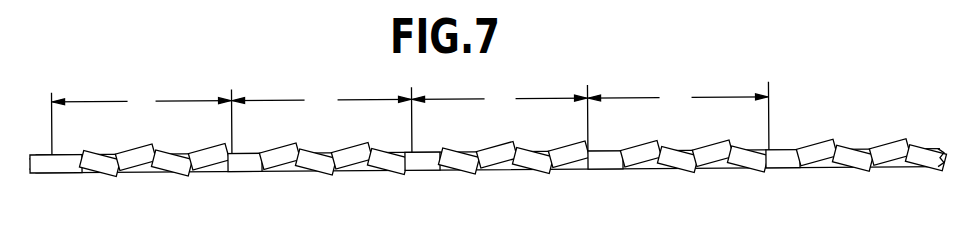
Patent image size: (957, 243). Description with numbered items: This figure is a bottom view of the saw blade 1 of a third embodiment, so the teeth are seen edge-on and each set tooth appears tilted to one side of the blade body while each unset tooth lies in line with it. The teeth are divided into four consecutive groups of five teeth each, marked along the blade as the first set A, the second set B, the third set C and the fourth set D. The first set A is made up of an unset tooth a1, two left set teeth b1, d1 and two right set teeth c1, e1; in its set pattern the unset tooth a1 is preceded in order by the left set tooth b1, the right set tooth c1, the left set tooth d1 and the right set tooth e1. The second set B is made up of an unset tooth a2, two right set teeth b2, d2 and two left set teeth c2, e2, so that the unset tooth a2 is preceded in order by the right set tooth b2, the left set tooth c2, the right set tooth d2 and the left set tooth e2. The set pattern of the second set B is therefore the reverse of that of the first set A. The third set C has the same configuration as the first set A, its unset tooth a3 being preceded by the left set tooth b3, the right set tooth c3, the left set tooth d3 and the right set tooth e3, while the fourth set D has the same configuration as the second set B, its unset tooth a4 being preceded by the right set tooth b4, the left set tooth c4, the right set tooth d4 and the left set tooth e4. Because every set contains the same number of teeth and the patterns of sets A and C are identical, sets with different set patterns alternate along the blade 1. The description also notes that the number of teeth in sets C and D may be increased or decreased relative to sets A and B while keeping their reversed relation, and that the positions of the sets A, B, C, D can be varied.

The saw blade 1 is at (488, 143).
The first set A is at (679, 150).
The second set B is at (500, 151).
The third set C is at (320, 152).
The fourth set D is at (130, 154).
The unset tooth a1 is at (610, 175).
The left set tooth b1 is at (648, 175).
The right set tooth c1 is at (683, 175).
The left set tooth d1 is at (718, 175).
The right set tooth e1 is at (755, 175).
The unset tooth a2 is at (437, 175).
The right set tooth b2 is at (474, 175).
The left set tooth c2 is at (511, 175).
The right set tooth d2 is at (545, 175).
The left set tooth e2 is at (580, 175).
The unset tooth a3 is at (258, 175).
The left set tooth b3 is at (296, 175).
The right set tooth c3 is at (333, 175).
The left set tooth d3 is at (366, 175).
The right set tooth e3 is at (401, 175).
The unset tooth a4 is at (80, 175).
The right set tooth b4 is at (113, 175).
The left set tooth c4 is at (148, 175).
The right set tooth d4 is at (181, 175).
The left set tooth e4 is at (217, 175).